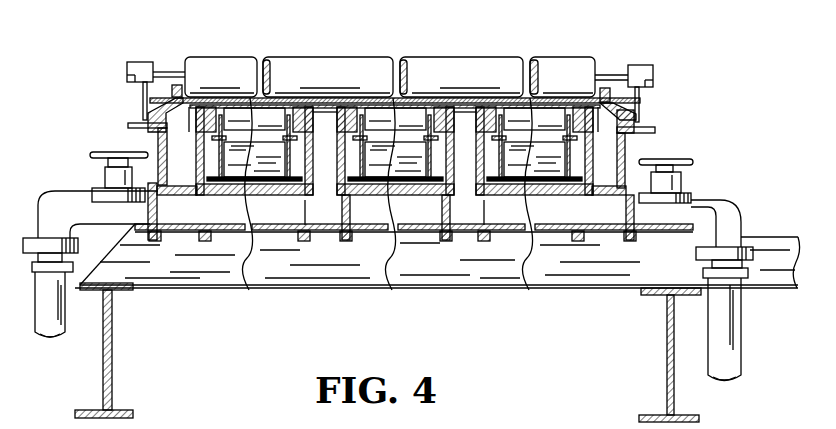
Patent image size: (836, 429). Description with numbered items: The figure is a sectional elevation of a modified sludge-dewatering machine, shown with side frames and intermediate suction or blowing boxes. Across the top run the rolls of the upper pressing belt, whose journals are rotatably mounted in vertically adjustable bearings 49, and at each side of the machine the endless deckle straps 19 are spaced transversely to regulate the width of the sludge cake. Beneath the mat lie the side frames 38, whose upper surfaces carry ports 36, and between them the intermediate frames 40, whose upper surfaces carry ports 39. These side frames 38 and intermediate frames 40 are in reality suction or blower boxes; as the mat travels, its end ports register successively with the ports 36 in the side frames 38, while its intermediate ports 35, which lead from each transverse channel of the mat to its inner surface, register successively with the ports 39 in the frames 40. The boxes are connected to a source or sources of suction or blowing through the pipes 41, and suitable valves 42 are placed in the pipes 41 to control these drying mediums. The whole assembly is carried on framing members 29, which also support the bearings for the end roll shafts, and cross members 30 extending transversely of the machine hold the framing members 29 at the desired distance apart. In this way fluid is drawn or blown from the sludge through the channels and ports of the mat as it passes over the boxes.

The deckle straps 19 is at (176, 84).
The framing members 29 is at (113, 350).
The cross members 30 is at (437, 256).
The intermediate ports 35 is at (323, 108).
The ports 36 is at (189, 116).
The side frames 38 is at (163, 157).
The ports 39 is at (394, 151).
The frames 40 is at (391, 211).
The pipes 41 is at (37, 315).
The valves 42 is at (105, 170).
The vertically adjustable bearings 49 is at (338, 57).